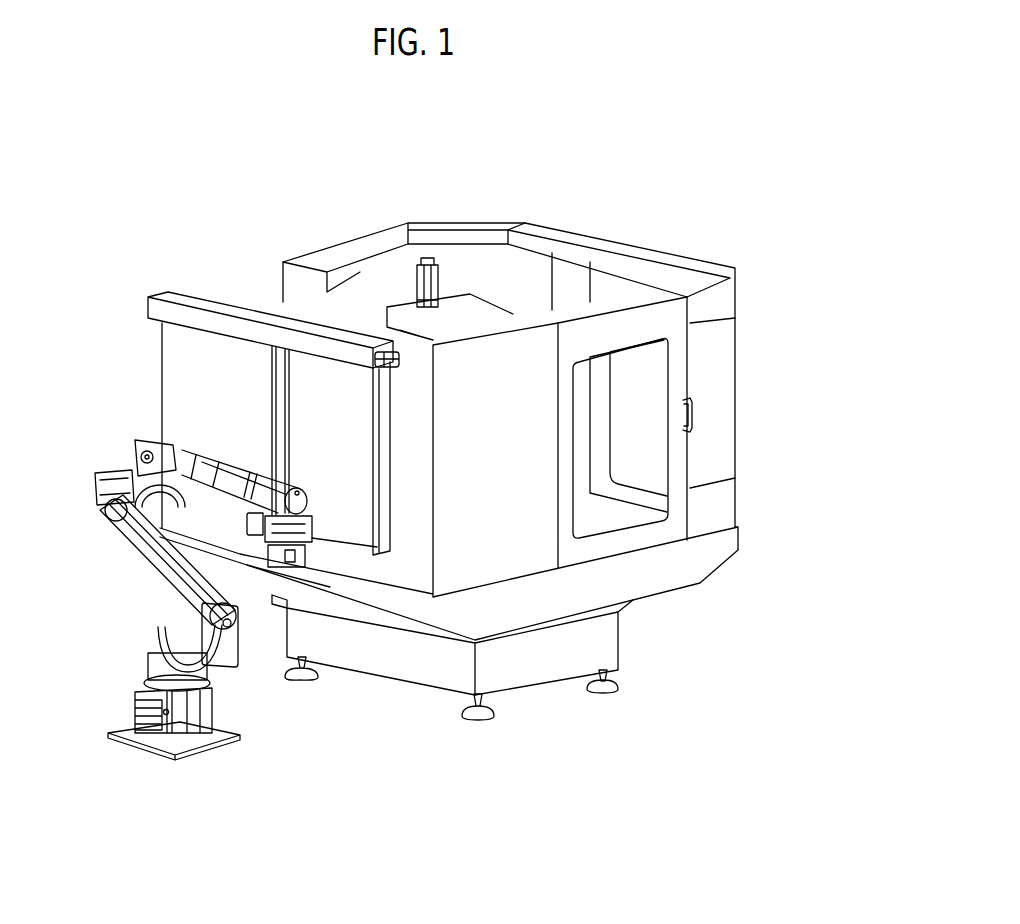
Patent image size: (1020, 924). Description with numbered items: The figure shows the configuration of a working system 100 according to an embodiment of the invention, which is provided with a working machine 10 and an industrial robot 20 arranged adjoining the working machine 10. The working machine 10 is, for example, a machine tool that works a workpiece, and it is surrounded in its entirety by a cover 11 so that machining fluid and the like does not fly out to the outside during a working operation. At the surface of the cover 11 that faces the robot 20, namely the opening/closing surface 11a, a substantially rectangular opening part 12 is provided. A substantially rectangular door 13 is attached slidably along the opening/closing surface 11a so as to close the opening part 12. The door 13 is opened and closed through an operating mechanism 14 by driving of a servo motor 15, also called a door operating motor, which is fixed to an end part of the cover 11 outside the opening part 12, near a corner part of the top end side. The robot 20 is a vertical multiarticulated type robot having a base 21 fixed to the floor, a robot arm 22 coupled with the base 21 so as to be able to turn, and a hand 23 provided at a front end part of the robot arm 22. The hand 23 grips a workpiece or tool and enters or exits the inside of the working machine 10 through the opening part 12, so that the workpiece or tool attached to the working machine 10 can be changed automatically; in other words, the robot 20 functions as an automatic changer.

The working system 100 is at (618, 184).
The working machine 10 is at (708, 621).
The cover 11 is at (472, 557).
The opening/closing surface 11a is at (185, 352).
The opening part 12 is at (357, 507).
The door 13 is at (333, 520).
The operating mechanism 14 is at (266, 312).
The servo motor 15 is at (386, 347).
The industrial robot 20 is at (223, 762).
The base 21 is at (137, 696).
The robot arm 22 is at (128, 553).
The hand 23 is at (268, 558).